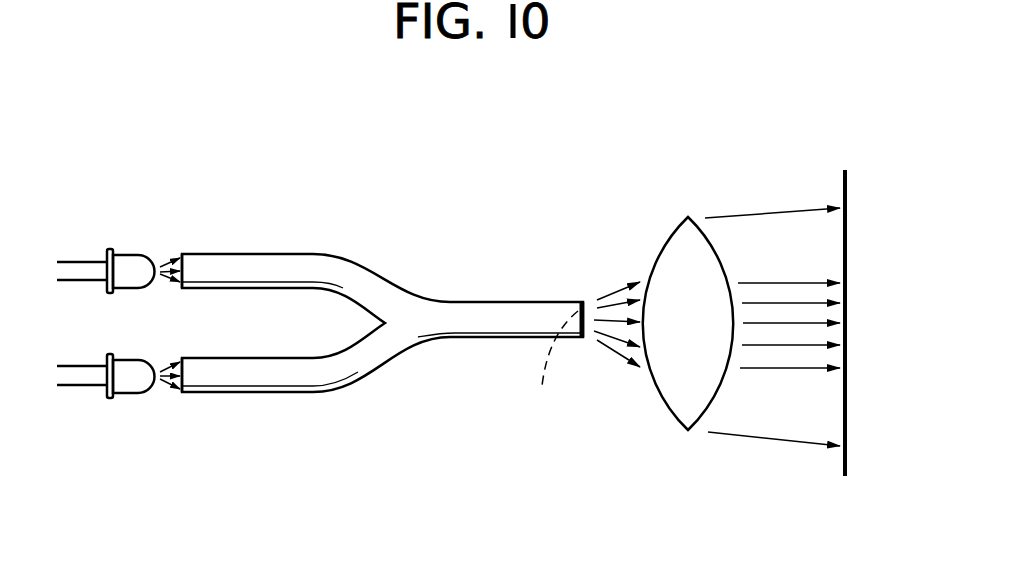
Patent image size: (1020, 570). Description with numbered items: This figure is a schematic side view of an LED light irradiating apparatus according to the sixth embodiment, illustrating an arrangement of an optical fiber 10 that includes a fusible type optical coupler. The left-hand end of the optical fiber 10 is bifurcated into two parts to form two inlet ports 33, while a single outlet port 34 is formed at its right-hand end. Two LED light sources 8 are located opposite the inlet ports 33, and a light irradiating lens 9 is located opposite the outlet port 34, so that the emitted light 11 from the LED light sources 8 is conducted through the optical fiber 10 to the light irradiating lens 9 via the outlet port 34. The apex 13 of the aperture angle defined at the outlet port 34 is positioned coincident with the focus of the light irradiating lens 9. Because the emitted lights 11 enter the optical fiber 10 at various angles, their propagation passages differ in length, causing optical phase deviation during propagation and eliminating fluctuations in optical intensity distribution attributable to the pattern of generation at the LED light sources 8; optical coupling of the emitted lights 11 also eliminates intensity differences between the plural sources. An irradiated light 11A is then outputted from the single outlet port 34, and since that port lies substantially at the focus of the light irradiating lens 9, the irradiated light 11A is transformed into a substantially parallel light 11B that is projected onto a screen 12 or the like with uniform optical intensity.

The LED light source 8 is at (130, 265).
The emitted light 11 is at (173, 188).
The inlet port 33 is at (180, 253).
The optical fiber 10 is at (453, 300).
The outlet port 34 is at (583, 304).
The apex of aperture angle 13 is at (526, 390).
The irradiated light 11A is at (615, 340).
The light irradiating lens 9 is at (668, 238).
The parallel light 11B is at (765, 370).
The screen 12 is at (843, 182).